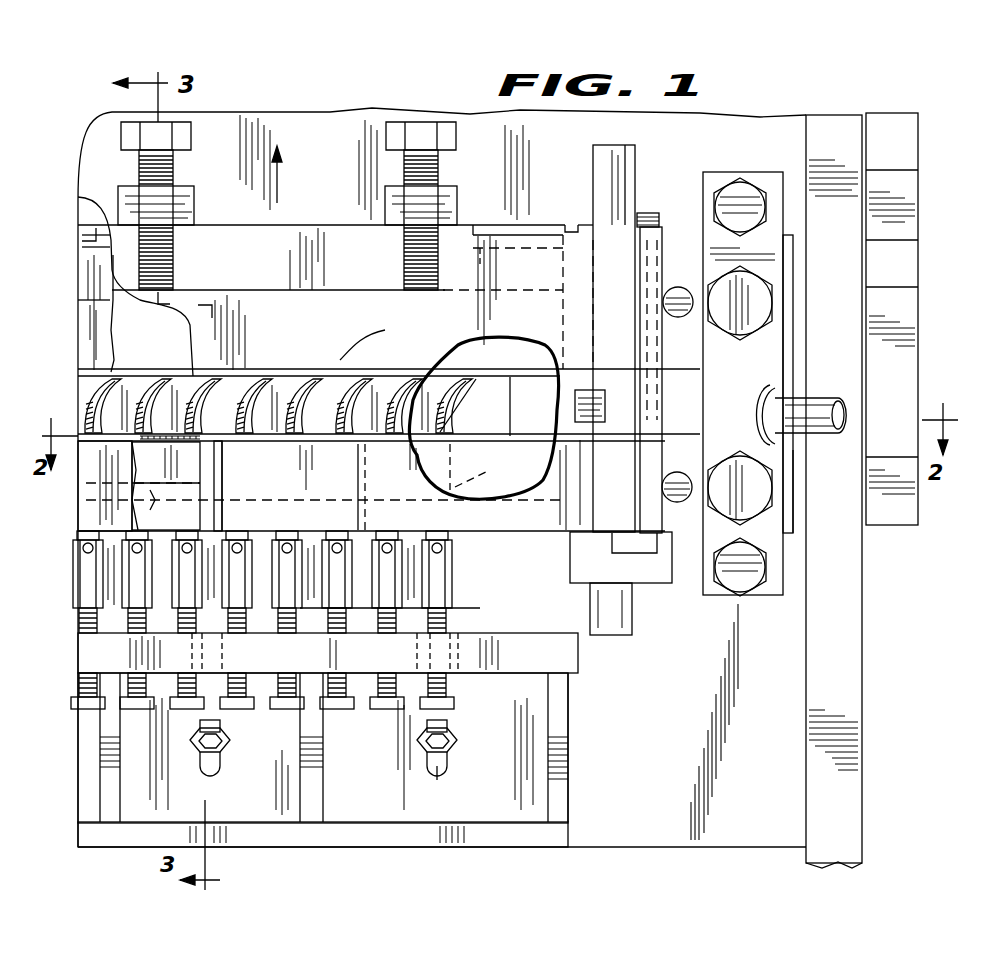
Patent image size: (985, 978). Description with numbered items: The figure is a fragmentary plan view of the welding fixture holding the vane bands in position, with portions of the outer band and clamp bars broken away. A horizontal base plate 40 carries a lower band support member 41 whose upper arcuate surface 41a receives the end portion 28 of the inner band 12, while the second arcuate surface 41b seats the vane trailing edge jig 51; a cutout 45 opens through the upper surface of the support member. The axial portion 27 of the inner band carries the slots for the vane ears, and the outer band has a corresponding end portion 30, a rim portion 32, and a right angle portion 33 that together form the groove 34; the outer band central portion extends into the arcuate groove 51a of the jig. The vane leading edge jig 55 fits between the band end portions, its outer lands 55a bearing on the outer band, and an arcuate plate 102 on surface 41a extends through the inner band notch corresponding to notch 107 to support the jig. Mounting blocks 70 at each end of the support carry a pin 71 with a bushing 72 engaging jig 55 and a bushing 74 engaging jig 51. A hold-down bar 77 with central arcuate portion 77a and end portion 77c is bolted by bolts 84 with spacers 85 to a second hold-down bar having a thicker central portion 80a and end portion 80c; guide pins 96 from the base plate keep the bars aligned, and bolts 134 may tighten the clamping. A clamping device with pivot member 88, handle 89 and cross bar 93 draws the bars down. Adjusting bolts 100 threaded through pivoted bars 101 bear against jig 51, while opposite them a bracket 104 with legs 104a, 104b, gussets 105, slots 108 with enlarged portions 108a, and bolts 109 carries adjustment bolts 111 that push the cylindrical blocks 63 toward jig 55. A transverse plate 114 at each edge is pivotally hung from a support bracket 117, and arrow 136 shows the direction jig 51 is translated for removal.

The inner band 12 is at (278, 497).
The axial portion 27 is at (456, 412).
The inner band end portion 28 is at (482, 467).
The outer band end portion 30 is at (224, 518).
The rim portion 32 is at (147, 300).
The right angle portion 33 is at (482, 270).
The groove 34 is at (78, 197).
The base plate 40 is at (632, 847).
The lower band support member 41 is at (520, 392).
The upper arcuate surface 41a is at (478, 595).
The second arcuate surface 41b is at (300, 230).
The cutout 45 is at (512, 432).
The vane trailing edge jig 51 is at (246, 300).
The arcuate groove 51a is at (270, 378).
The vane leading edge jig 55 is at (315, 502).
The outer lands 55a is at (222, 472).
The cylindrical block 63 is at (90, 588).
The mounting block 70 is at (585, 392).
The pin 71 is at (626, 636).
The bushing 72 is at (648, 584).
The bushing 74 is at (578, 230).
The hold-down bar 77 is at (500, 533).
The central arcuate portion 77a is at (100, 512).
The end portion 77c is at (790, 535).
The central portion 80a is at (93, 318).
The end portion 80c is at (385, 330).
The bolt 84 is at (650, 218).
The spacer 85 is at (662, 420).
The pivot member 88 is at (768, 393).
The handle 89 is at (825, 400).
The cross bar 93 is at (775, 200).
The guide pin 96 is at (682, 316).
The adjusting bolt 100 is at (142, 158).
The elongated bar 101 is at (186, 196).
The arcuate plate 102 is at (167, 504).
The bracket 104 is at (86, 776).
The leg 104a is at (575, 663).
The leg 104b is at (540, 810).
The reinforcing gusset 105 is at (568, 775).
The notch 107 is at (148, 482).
The slot 108 is at (437, 780).
The enlarged slot portion 108a is at (412, 670).
The bolt 109 is at (231, 748).
The adjustment bolt 111 is at (450, 690).
The transverse plate 114 is at (848, 846).
The support bracket 117 is at (915, 515).
The bolt 134 is at (775, 318).
The arrow 136 is at (280, 178).